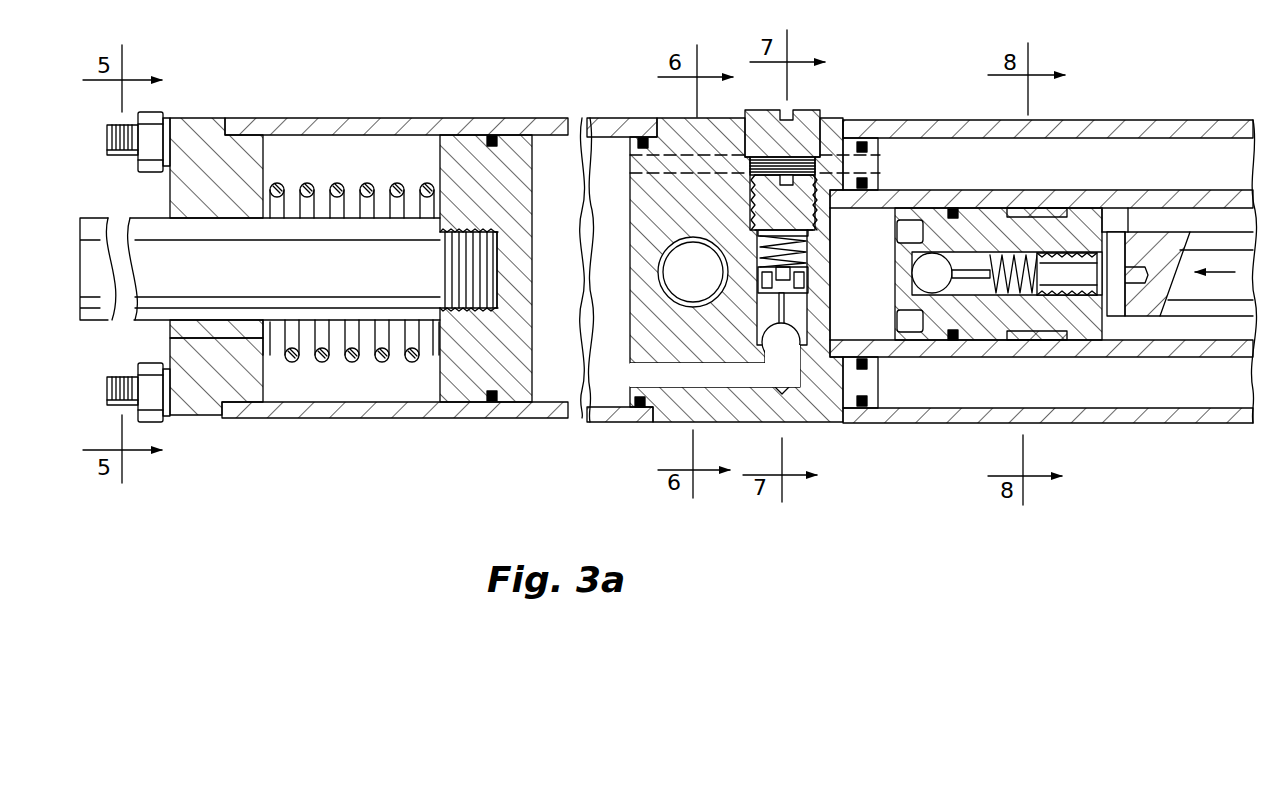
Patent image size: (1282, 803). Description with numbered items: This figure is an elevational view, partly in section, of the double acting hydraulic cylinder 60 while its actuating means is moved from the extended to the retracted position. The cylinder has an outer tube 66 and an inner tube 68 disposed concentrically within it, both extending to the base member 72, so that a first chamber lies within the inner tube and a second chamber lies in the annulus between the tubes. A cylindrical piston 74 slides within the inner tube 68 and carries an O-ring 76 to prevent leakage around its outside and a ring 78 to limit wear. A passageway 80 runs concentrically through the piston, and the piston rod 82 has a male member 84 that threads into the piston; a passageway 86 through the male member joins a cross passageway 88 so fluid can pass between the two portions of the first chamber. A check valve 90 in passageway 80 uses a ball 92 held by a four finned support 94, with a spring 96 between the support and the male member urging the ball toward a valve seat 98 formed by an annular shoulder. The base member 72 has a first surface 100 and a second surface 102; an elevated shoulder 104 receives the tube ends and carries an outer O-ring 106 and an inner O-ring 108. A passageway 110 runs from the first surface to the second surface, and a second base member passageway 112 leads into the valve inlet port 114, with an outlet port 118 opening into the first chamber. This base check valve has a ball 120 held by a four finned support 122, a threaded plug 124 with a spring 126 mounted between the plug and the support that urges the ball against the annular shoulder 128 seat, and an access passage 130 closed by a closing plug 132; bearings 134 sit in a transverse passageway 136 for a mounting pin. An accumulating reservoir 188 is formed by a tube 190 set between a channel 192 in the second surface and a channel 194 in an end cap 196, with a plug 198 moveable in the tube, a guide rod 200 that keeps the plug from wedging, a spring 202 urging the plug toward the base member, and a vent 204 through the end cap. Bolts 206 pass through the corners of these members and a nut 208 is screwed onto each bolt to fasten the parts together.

The double acting hydraulic cylinder 60 is at (1105, 121).
The outer tube 66 is at (1198, 121).
The inner tube 68 is at (1203, 190).
The base member 72 is at (703, 118).
The cylindrical piston 74 is at (987, 340).
The O-ring 76 is at (955, 340).
The ring 78 is at (1042, 340).
The passageway 80 is at (903, 275).
The piston rod 82 is at (1207, 235).
The male member 84 is at (1068, 248).
The passageway 86 is at (1103, 305).
The cross passageway 88 is at (1115, 242).
The check valve 90 is at (925, 285).
The ball 92 is at (907, 300).
The four finned support 94 is at (963, 255).
The spring 96 is at (1000, 298).
The valve seat 98 is at (903, 263).
The first surface 100 is at (843, 123).
The second surface 102 is at (630, 237).
The elevated shoulder 104 is at (880, 153).
The outer O-ring 106 is at (870, 140).
The inner O-ring 108 is at (880, 180).
The passageway 110 is at (630, 163).
The second base member passageway 112 is at (635, 372).
The valve inlet port 114 is at (775, 372).
The outlet port 118 is at (825, 247).
The ball 120 is at (762, 327).
The four finned support 122 is at (770, 310).
The plug 124 is at (773, 202).
The spring seat 126 is at (760, 237).
The annular shoulder 128 is at (800, 365).
The access passage 130 is at (747, 185).
The closing plug 132 is at (802, 110).
The bearings 134 is at (668, 280).
The passageway 136 is at (667, 262).
The accumulating reservoir 188 is at (515, 116).
The tube 190 is at (412, 420).
The channel 192 is at (645, 425).
The channel 194 is at (235, 408).
The end cap 196 is at (195, 417).
The plug 198 is at (520, 400).
The guide rod 200 is at (140, 222).
The spring 202 is at (327, 362).
The vent 204 is at (170, 338).
The bolts 206 is at (108, 147).
The nut 208 is at (157, 112).